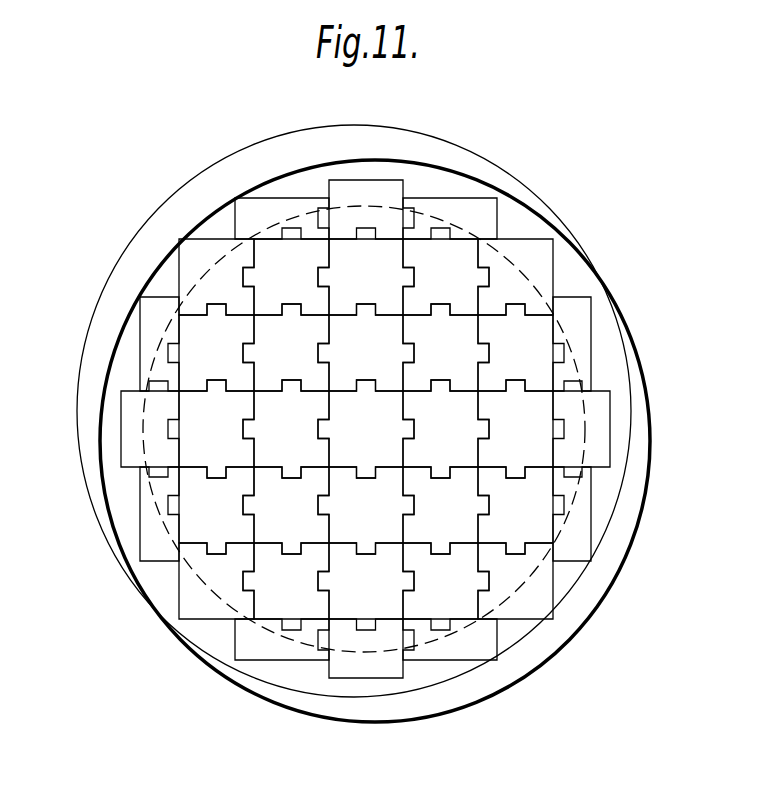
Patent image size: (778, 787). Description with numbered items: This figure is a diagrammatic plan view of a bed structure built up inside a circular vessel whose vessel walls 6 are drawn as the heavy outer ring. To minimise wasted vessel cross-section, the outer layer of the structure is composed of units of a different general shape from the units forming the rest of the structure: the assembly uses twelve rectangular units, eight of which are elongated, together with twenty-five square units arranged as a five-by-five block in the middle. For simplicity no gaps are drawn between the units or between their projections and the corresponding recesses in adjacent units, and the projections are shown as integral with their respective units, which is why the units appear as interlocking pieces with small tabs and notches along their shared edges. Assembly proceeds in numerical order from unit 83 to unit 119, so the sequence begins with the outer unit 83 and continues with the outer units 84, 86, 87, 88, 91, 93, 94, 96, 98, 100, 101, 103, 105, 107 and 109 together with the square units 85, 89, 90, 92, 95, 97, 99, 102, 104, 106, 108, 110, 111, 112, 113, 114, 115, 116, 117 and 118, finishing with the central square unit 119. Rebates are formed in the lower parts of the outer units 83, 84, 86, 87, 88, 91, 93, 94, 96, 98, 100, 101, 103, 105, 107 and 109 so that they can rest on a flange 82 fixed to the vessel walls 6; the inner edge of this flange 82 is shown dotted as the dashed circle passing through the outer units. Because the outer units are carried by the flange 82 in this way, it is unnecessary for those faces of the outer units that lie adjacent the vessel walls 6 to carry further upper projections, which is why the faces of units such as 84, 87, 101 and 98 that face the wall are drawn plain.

The vessel walls 6 is at (518, 193).
The flange 82 is at (508, 258).
The outer unit 83 is at (211, 296).
The outer unit 84 is at (267, 208).
The square unit 85 is at (278, 290).
The outer unit 86 is at (496, 294).
The outer unit 87 is at (458, 205).
The outer unit 88 is at (370, 185).
The square unit 89 is at (454, 290).
The square unit 90 is at (353, 290).
The outer unit 91 is at (578, 337).
The square unit 92 is at (502, 366).
The outer unit 93 is at (492, 582).
The outer unit 94 is at (583, 526).
The square unit 95 is at (502, 518).
The outer unit 96 is at (600, 431).
The square unit 97 is at (502, 442).
The outer unit 98 is at (457, 647).
The square unit 99 is at (454, 594).
The outer unit 100 is at (208, 582).
The outer unit 101 is at (262, 645).
The square unit 102 is at (274, 594).
The outer unit 103 is at (352, 665).
The square unit 104 is at (349, 594).
The outer unit 105 is at (150, 527).
The square unit 106 is at (234, 518).
The outer unit 107 is at (152, 343).
The square unit 108 is at (234, 366).
The outer unit 109 is at (130, 433).
The square unit 110 is at (234, 442).
The square unit 111 is at (274, 366).
The square unit 112 is at (458, 366).
The square unit 113 is at (349, 366).
The square unit 114 is at (458, 518).
The square unit 115 is at (458, 442).
The square unit 116 is at (274, 518).
The square unit 117 is at (349, 518).
The square unit 118 is at (274, 442).
The square unit 119 is at (349, 442).